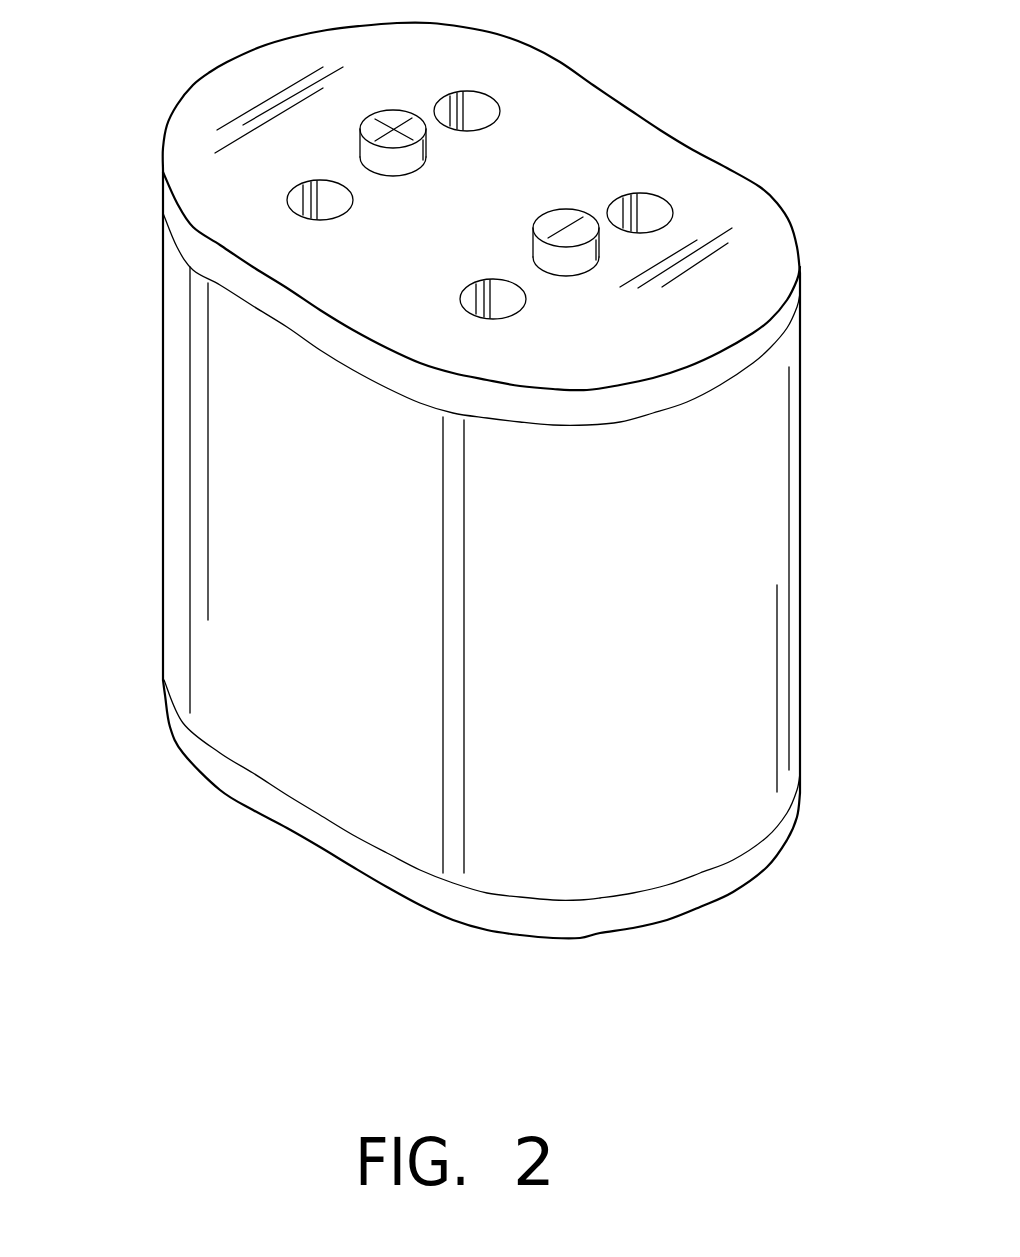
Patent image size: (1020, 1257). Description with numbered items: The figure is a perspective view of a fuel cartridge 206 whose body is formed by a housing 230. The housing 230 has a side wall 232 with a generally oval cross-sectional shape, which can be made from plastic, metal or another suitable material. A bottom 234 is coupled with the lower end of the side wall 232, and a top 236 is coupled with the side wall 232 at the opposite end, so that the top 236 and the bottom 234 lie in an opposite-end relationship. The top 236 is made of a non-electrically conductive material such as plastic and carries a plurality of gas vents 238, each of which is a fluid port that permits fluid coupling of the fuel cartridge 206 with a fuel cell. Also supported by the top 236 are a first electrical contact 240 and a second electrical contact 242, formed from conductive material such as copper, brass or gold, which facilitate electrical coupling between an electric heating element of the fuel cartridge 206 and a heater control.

The fuel cartridge 206 is at (725, 83).
The housing 230 is at (130, 408).
The side wall 232 is at (765, 467).
The bottom 234 is at (720, 887).
The top 236 is at (489, 58).
The gas vents 238 is at (482, 115).
The first electrical contact 240 is at (543, 250).
The second electrical contact 242 is at (410, 157).